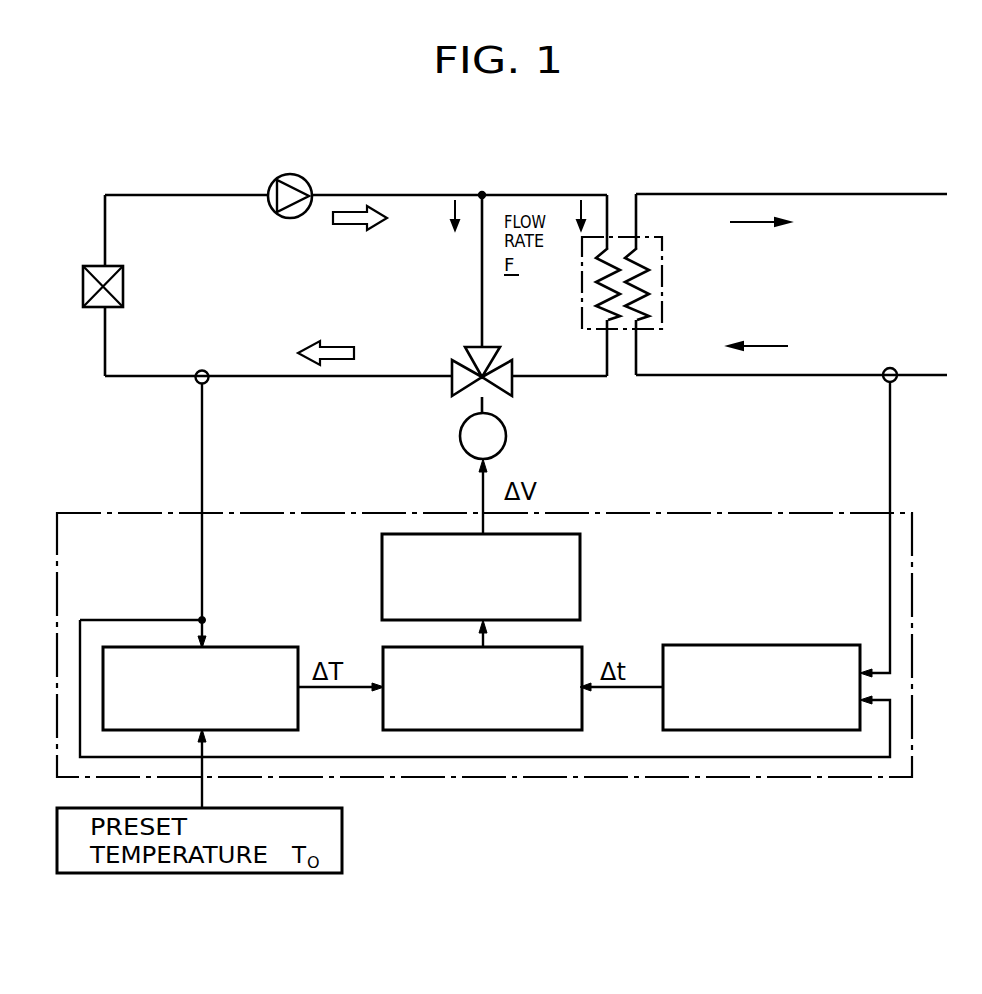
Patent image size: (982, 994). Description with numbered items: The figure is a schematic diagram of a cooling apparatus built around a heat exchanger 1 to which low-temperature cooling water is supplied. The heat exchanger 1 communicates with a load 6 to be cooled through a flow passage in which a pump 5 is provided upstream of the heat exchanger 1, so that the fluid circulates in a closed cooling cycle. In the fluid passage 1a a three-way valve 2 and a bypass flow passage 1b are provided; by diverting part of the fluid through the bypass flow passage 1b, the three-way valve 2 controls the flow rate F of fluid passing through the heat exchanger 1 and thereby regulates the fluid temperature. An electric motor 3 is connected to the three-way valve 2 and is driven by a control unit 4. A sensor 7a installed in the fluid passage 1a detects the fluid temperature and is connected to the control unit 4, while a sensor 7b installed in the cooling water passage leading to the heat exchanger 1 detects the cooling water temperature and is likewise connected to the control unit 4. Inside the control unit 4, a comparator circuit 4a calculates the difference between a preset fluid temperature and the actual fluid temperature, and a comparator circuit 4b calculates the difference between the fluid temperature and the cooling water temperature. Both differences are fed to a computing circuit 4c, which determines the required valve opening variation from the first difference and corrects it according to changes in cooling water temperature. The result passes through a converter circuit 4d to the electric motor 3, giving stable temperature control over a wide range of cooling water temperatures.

The heat exchanger 1 is at (662, 268).
The fluid passage 1a is at (607, 212).
The bypass flow passage 1b is at (482, 212).
The three-way valve 2 is at (467, 350).
The electric motor 3 is at (461, 428).
The control unit 4 is at (57, 538).
The comparator circuit 4a is at (232, 647).
The comparator circuit 4b is at (765, 645).
The computing circuit 4c is at (582, 647).
The converter circuit 4d is at (416, 534).
The pump 5 is at (277, 181).
The load 6 is at (83, 268).
The sensor 7a is at (198, 383).
The sensor 7b is at (896, 381).